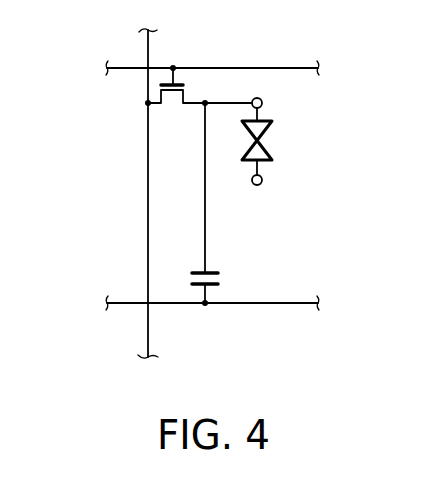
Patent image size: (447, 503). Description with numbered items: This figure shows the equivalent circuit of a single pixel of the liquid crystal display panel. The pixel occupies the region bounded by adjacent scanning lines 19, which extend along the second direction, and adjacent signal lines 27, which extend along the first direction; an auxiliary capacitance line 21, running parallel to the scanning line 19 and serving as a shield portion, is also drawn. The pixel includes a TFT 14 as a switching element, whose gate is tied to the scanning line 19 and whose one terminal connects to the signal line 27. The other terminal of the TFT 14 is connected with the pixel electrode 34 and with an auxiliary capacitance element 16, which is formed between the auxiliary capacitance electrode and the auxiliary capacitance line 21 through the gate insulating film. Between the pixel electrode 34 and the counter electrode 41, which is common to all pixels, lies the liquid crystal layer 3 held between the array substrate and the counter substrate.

The scanning line 19 is at (122, 66).
The signal line 27 is at (146, 150).
The auxiliary capacitance line 21 is at (287, 305).
The TFT 14 is at (196, 91).
The pixel electrode 34 is at (263, 103).
The liquid crystal layer 3 is at (274, 142).
The counter electrode 41 is at (263, 180).
The auxiliary capacitance element 16 is at (228, 281).